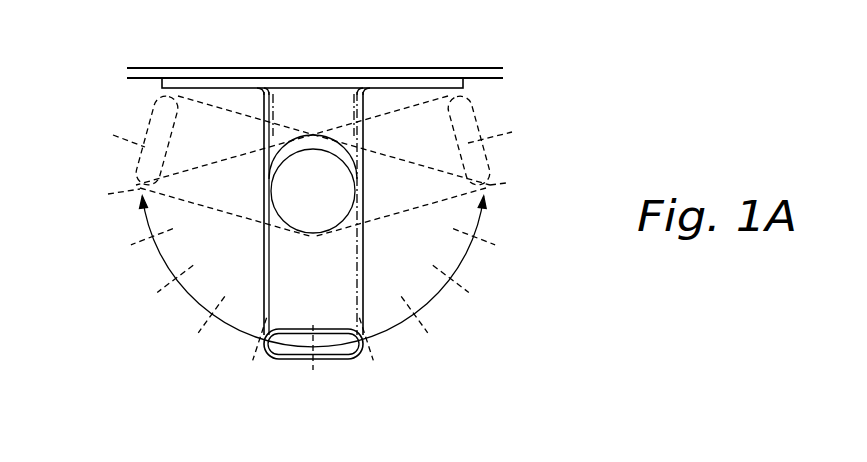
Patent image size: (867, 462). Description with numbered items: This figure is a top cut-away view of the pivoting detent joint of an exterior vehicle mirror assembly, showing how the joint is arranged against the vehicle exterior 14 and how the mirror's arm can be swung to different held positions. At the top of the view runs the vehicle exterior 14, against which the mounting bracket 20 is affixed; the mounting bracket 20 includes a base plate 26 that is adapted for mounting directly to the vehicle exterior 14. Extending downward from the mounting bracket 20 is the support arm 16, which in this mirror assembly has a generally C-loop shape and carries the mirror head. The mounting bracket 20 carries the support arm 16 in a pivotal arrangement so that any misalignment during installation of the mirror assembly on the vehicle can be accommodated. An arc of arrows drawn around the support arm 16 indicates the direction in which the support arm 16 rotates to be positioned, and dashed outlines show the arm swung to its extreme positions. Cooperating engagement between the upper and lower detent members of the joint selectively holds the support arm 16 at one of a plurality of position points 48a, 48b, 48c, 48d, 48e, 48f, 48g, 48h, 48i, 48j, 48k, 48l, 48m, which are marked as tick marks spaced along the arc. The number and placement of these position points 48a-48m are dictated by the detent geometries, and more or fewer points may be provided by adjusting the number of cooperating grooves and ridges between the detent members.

The vehicle exterior 14 is at (477, 68).
The base plate 26 is at (198, 80).
The mounting bracket 20 is at (262, 91).
The support arm 16 is at (277, 293).
The position point 48a is at (507, 133).
The position point 48b is at (492, 187).
The position point 48c is at (483, 237).
The position point 48d is at (455, 287).
The position point 48e is at (420, 330).
The position point 48f is at (370, 353).
The position point 48g is at (313, 366).
The position point 48h is at (252, 357).
The position point 48i is at (203, 322).
The position point 48j is at (160, 292).
The position point 48k is at (130, 248).
The position point 48l is at (120, 192).
The position point 48m is at (125, 135).